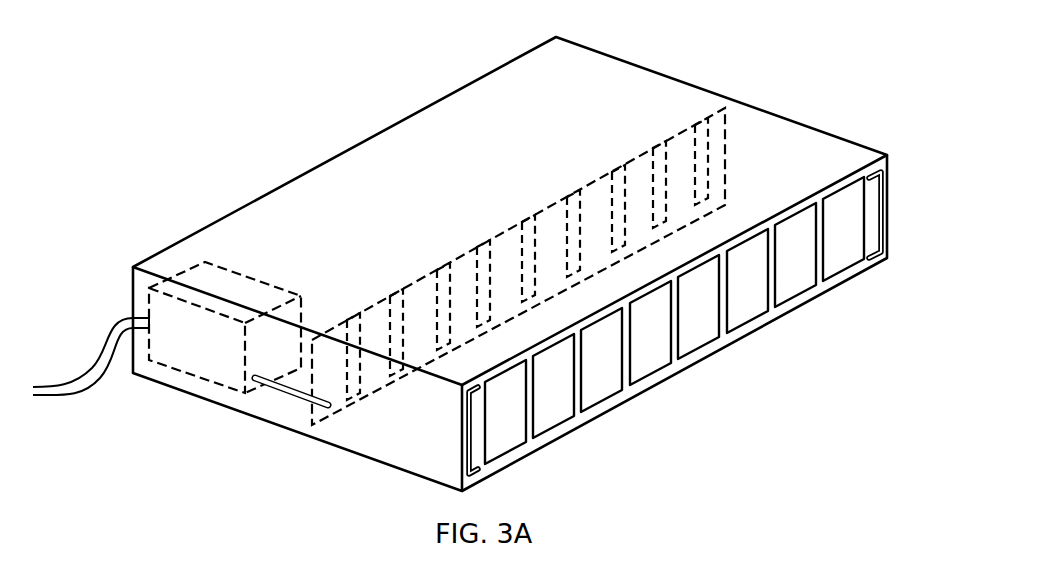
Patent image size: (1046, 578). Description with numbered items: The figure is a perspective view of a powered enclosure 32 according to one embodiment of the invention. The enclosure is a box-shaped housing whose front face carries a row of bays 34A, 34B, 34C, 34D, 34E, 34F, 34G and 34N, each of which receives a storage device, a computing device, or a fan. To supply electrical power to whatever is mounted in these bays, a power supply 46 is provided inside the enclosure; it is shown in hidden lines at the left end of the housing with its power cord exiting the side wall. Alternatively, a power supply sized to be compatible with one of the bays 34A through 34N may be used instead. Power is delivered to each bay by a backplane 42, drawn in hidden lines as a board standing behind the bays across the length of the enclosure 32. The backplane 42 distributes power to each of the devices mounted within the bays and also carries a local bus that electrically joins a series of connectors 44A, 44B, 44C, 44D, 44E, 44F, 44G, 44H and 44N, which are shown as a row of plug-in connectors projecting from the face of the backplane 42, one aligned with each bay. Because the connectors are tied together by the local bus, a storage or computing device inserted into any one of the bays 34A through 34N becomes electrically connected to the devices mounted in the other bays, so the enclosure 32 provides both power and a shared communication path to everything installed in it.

The powered enclosure 32 is at (624, 60).
The bay 34A is at (497, 462).
The bay 34B is at (547, 434).
The bay 34C is at (593, 412).
The bay 34D is at (646, 388).
The bay 34E is at (693, 355).
The bay 34F is at (740, 328).
The bay 34G is at (787, 302).
The bay 34N is at (833, 278).
The backplane 42 is at (495, 225).
The connector 44A is at (358, 305).
The connector 44B is at (401, 290).
The connector 44C is at (448, 262).
The connector 44D is at (480, 243).
The connector 44E is at (535, 215).
The connector 44F is at (579, 190).
The connector 44G is at (623, 168).
The connector 44H is at (664, 148).
The connector 44N is at (708, 125).
The power supply 46 is at (197, 273).